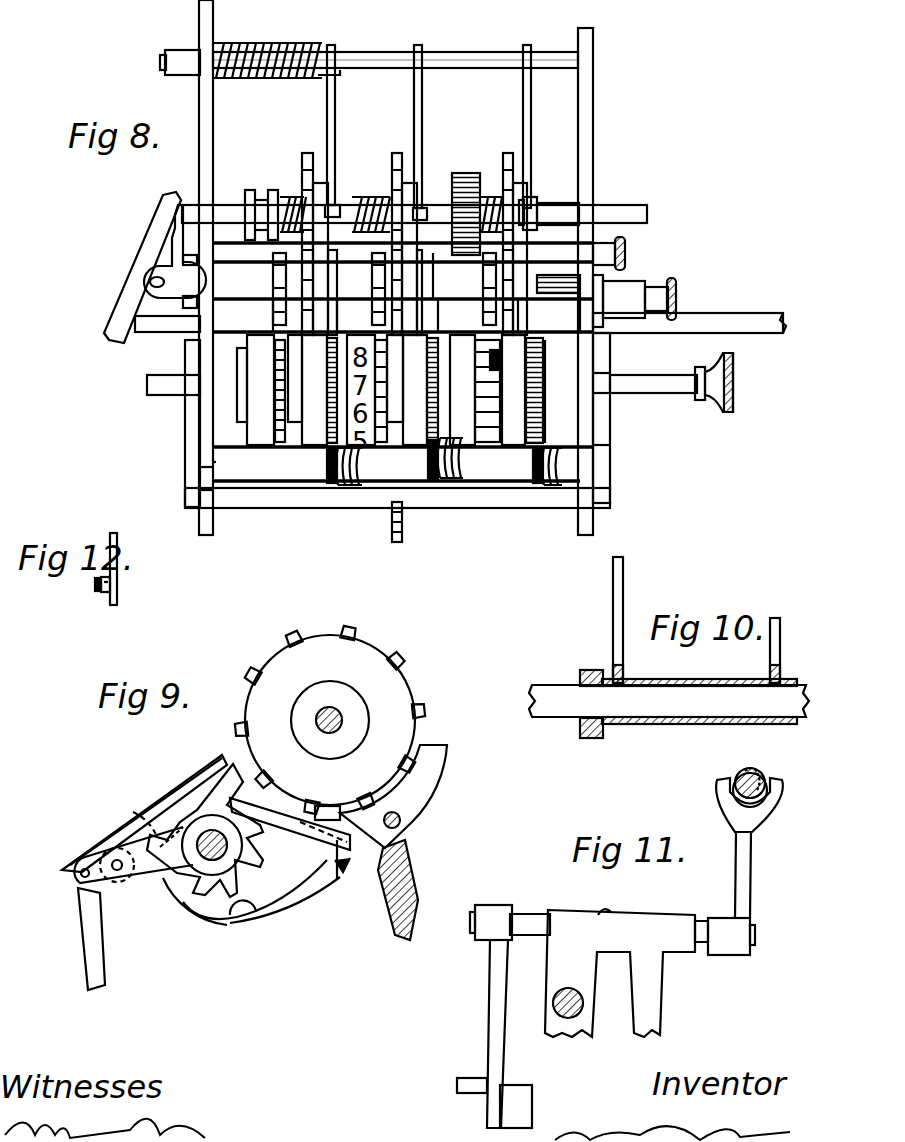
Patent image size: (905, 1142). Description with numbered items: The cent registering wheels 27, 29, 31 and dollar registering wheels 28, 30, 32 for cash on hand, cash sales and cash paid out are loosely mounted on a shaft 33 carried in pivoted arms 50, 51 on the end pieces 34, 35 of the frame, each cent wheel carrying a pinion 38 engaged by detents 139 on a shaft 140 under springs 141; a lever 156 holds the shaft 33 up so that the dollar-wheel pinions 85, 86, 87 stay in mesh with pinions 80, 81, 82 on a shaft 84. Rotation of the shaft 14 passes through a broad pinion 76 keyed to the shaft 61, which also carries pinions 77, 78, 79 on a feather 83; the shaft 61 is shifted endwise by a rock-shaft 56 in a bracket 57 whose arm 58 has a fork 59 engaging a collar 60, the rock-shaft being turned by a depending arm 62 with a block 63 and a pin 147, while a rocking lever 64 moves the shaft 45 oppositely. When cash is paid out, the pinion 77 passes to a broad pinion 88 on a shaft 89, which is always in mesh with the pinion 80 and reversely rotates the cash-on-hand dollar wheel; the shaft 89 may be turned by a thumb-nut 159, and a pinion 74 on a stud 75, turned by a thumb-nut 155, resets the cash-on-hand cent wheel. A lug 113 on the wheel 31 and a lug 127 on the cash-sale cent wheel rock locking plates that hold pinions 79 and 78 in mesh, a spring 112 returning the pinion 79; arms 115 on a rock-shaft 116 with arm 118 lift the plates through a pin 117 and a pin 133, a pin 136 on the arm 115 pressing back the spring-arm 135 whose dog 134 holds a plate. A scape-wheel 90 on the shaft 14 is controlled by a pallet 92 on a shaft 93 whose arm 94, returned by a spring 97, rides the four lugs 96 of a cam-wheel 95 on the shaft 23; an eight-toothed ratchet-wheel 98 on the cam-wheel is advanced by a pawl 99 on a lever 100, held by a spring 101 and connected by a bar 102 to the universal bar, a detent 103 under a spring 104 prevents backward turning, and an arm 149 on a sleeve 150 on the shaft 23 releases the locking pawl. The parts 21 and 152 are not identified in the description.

In FIG. 9, the shaft 14 is at (322, 732).
In FIG. 8, the knob 21 is at (716, 400).
In FIG. 9, the shaft 23 is at (200, 848).
In FIG. 10, the shaft 23 is at (669, 701).
In FIG. 11, the shaft 23 is at (562, 1015).
In FIG. 8, the cent registering wheel 27 is at (511, 452).
In FIG. 8, the dollar registering wheel 28 is at (461, 345).
In FIG. 8, the cent registering wheel 29 is at (421, 407).
In FIG. 8, the dollar registering wheel 30 is at (353, 345).
In FIG. 8, the cent registering wheel 31 is at (312, 450).
In FIG. 8, the dollar registering wheel 32 is at (252, 430).
In FIG. 8, the shaft 33 is at (150, 383).
In FIG. 8, the end piece 34 is at (590, 435).
In FIG. 8, the end piece 35 is at (200, 440).
In FIG. 8, the pinion 38 is at (535, 368).
In FIG. 8, the shaft 45 is at (155, 298).
In FIG. 8, the arm 50 is at (612, 447).
In FIG. 8, the arm 51 is at (190, 430).
In FIG. 11, the rock-shaft 56 is at (527, 920).
In FIG. 11, the bracket 57 is at (620, 973).
In FIG. 11, the arm 58 is at (738, 842).
In FIG. 11, the fork 59 is at (718, 799).
In FIG. 8, the collar 60 is at (252, 192).
In FIG. 11, the collar 60 is at (751, 768).
In FIG. 8, the shaft 61 is at (620, 194).
In FIG. 11, the shaft 61 is at (737, 774).
In FIG. 11, the depending arm 62 is at (495, 972).
In FIG. 11, the block 63 is at (516, 1106).
In FIG. 8, the rocking lever 64 is at (168, 207).
In FIG. 8, the pinion 74 is at (563, 312).
In FIG. 8, the stud 75 is at (630, 301).
In FIG. 8, the pinion 76 is at (463, 172).
In FIG. 8, the pinion 77 is at (508, 158).
In FIG. 8, the pinion 78 is at (393, 160).
In FIG. 8, the pinion 79 is at (305, 158).
In FIG. 8, the pinion 80 is at (483, 278).
In FIG. 8, the pinion 81 is at (372, 278).
In FIG. 8, the pinion 82 is at (273, 278).
In FIG. 8, the feather 83 is at (553, 205).
In FIG. 8, the shaft 84 is at (251, 315).
In FIG. 8, the pinion 85 is at (487, 462).
In FIG. 8, the pinion 86 is at (390, 450).
In FIG. 8, the pinion 87 is at (282, 450).
In FIG. 8, the broad pinion 88 is at (505, 280).
In FIG. 8, the shaft 89 is at (433, 268).
In FIG. 9, the scape-wheel 90 is at (330, 720).
In FIG. 9, the pallet 92 is at (424, 795).
In FIG. 9, the shaft 93 is at (402, 822).
In FIG. 9, the arm 94 is at (244, 915).
In FIG. 9, the cam-wheel 95 is at (222, 900).
In FIG. 9, the lugs 96 is at (272, 862).
In FIG. 9, the spring 97 is at (305, 905).
In FIG. 9, the ratchet-wheel 98 is at (200, 882).
In FIG. 9, the pawl 99 is at (205, 780).
In FIG. 9, the lever 100 is at (80, 862).
In FIG. 9, the spring 101 is at (118, 848).
In FIG. 9, the bar 102 is at (85, 937).
In FIG. 9, the detent 103 is at (290, 824).
In FIG. 9, the spring 104 is at (335, 866).
In FIG. 8, the spring 112 is at (285, 197).
In FIG. 8, the lug 113 is at (300, 345).
In FIG. 8, the arm 115 is at (327, 120).
In FIG. 12, the arm 115 is at (118, 557).
In FIG. 8, the rock-shaft 116 is at (452, 58).
In FIG. 8, the pin 117 is at (336, 212).
In FIG. 8, the arm 118 is at (177, 40).
In FIG. 8, the lug 127 is at (403, 345).
In FIG. 8, the pin 133 is at (536, 205).
In FIG. 12, the dog 134 is at (96, 588).
In FIG. 12, the spring-arm 135 is at (103, 578).
In FIG. 8, the pin 136 is at (523, 190).
In FIG. 12, the pin 136 is at (106, 595).
In FIG. 8, the detents 139 is at (330, 470).
In FIG. 8, the shaft 140 is at (236, 467).
In FIG. 8, the springs 141 is at (352, 487).
In FIG. 11, the pin 147 is at (466, 1078).
In FIG. 10, the arm 149 is at (613, 620).
In FIG. 10, the sleeve 150 is at (688, 680).
In FIG. 10, the post 152 is at (770, 648).
In FIG. 8, the thumb-nut 155 is at (677, 294).
In FIG. 8, the lever 156 is at (404, 530).
In FIG. 8, the thumb-nut 159 is at (627, 250).